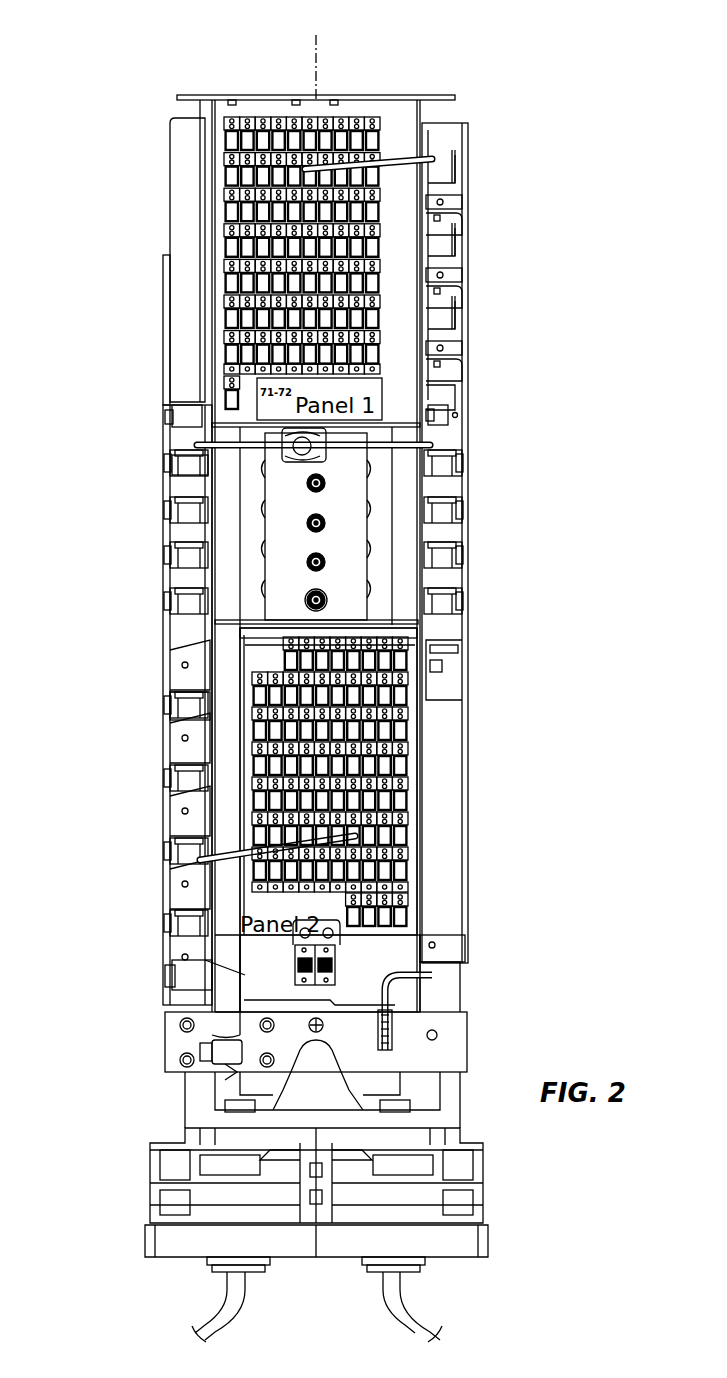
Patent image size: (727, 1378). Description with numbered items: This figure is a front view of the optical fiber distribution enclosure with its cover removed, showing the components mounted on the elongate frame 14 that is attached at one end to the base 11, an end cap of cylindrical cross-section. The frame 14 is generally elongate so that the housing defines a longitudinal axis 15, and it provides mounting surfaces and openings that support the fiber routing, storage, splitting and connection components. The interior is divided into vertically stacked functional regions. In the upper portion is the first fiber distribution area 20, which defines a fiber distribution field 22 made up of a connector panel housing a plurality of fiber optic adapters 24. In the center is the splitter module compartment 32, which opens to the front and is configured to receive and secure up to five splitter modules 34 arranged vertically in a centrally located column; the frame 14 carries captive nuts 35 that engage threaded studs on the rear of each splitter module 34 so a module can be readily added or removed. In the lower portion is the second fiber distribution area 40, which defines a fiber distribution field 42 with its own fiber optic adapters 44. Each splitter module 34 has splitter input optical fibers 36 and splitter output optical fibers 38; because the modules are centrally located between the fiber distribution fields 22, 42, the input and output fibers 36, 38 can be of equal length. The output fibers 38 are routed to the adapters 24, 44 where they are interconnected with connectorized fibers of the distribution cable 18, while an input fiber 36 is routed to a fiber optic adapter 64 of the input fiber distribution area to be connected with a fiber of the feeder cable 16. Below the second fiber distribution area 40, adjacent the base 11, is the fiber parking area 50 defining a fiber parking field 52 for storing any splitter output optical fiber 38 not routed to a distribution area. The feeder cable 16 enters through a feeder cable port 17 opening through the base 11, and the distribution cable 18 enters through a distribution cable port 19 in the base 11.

The base 11 is at (160, 1175).
The frame 14 is at (470, 305).
The longitudinal axis 15 is at (316, 70).
The feeder cable 16 is at (215, 1320).
The feeder cable port 17 is at (210, 1272).
The distribution cable 18 is at (415, 1318).
The distribution cable port 19 is at (415, 1272).
The first fiber distribution area 20 is at (261, 108).
The fiber distribution field 22 is at (225, 255).
The fiber optic adapter 24 is at (277, 210).
The splitter module compartment 32 is at (352, 527).
The splitter module 34 is at (290, 456).
The captive nut 35 is at (305, 602).
The splitter input optical fiber 36 is at (220, 446).
The splitter output optical fiber 38 is at (405, 155).
The second fiber distribution area 40 is at (360, 628).
The fiber distribution field 42 is at (250, 718).
The fiber optic adapter 44 is at (368, 727).
The fiber parking area 50 is at (300, 1005).
The fiber parking field 52 is at (255, 1055).
The fiber optic adapter 64 is at (336, 965).